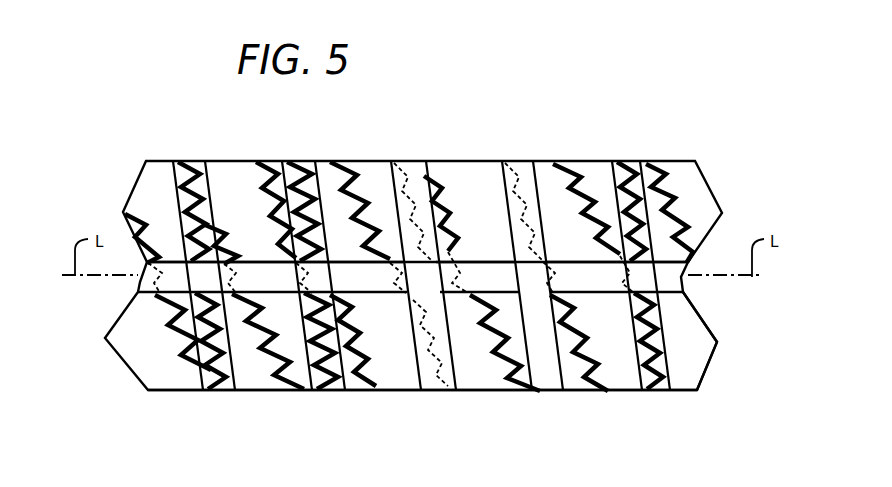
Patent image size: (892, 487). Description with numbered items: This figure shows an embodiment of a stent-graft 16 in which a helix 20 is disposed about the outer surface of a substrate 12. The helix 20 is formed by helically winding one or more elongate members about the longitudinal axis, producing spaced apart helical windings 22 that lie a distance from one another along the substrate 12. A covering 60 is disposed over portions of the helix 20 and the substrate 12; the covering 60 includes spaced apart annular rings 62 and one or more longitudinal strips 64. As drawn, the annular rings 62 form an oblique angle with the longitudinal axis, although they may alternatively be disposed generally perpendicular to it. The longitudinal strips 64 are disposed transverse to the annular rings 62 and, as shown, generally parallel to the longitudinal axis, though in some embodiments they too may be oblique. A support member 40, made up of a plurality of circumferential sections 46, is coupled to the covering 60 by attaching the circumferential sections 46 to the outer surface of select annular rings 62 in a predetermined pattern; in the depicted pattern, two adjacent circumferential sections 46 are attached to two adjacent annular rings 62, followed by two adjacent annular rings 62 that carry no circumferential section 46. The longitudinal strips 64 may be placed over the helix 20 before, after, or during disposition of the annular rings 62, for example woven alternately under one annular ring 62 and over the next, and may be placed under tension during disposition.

The stent-graft 16 is at (670, 130).
The helix 20 is at (360, 183).
The annular rings 62 is at (432, 184).
The covering 60 is at (542, 181).
The circumferential sections 46 is at (205, 357).
The substrate 12 is at (253, 377).
The support member 40 is at (313, 394).
The helical windings 22 is at (577, 362).
The longitudinal strips 64 is at (676, 299).